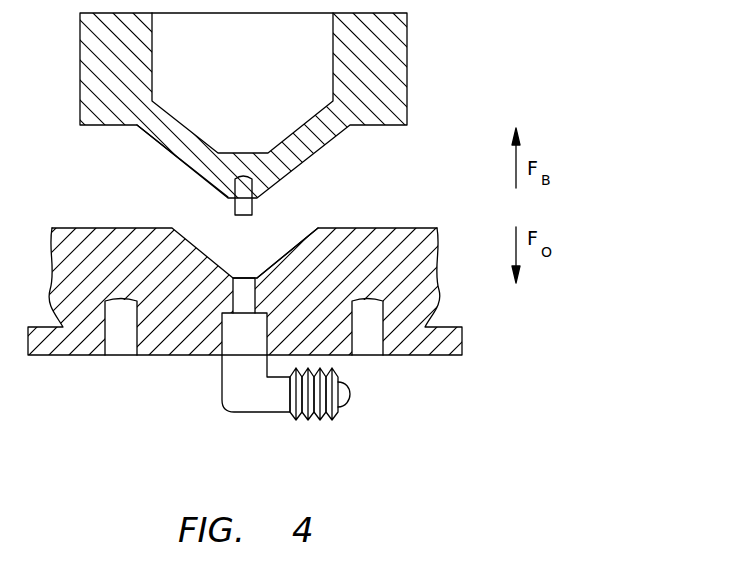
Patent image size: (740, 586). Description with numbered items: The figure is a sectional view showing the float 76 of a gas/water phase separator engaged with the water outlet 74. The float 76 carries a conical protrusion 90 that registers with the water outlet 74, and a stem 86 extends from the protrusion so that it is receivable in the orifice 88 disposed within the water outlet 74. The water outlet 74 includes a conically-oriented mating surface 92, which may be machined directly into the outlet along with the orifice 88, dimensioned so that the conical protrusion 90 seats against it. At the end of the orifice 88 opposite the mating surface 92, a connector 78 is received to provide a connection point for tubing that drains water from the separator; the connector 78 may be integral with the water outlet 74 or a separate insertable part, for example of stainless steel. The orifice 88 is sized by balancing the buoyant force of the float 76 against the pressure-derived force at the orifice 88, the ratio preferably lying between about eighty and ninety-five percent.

The water outlet 74 is at (268, 228).
The float 76 is at (80, 50).
The connector 78 is at (257, 413).
The stem 86 is at (235, 210).
The orifice 88 is at (237, 298).
The conical protrusion 90 is at (150, 140).
The mating surface 92 is at (283, 255).